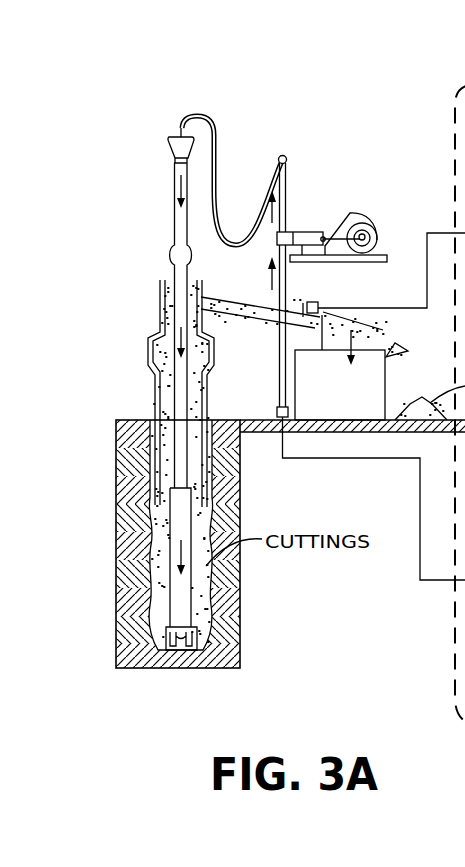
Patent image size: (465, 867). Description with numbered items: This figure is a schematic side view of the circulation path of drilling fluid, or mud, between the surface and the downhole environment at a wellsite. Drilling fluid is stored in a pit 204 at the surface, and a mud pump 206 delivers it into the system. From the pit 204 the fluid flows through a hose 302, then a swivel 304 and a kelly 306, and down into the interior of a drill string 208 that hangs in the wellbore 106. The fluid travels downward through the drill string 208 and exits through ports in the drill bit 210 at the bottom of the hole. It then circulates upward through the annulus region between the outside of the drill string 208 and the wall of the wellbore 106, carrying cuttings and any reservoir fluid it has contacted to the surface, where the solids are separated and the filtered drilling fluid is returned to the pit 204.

The swivel 304 is at (196, 117).
The hose 302 is at (280, 156).
The mud pump 206 is at (358, 212).
The kelly 306 is at (173, 218).
The wellbore 106 is at (143, 417).
The pit 204 is at (356, 413).
The drill string 208 is at (187, 508).
The drill bit 210 is at (208, 628).